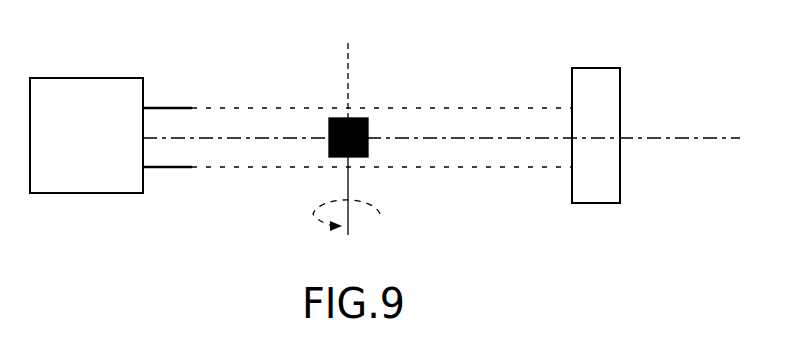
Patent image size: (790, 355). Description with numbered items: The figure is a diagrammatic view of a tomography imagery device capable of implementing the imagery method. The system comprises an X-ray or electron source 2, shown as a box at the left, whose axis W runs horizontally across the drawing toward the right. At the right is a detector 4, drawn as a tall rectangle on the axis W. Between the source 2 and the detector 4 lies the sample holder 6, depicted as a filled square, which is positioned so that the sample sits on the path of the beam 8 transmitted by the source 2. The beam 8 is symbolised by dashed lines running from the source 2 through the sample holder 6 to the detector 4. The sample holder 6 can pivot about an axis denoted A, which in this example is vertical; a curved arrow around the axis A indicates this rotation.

The X-ray or electron source 2 is at (74, 218).
The detector 4 is at (628, 106).
The sample holder 6 is at (367, 111).
The beam 8 is at (238, 138).
The axis A is at (346, 129).
The axis W is at (692, 138).